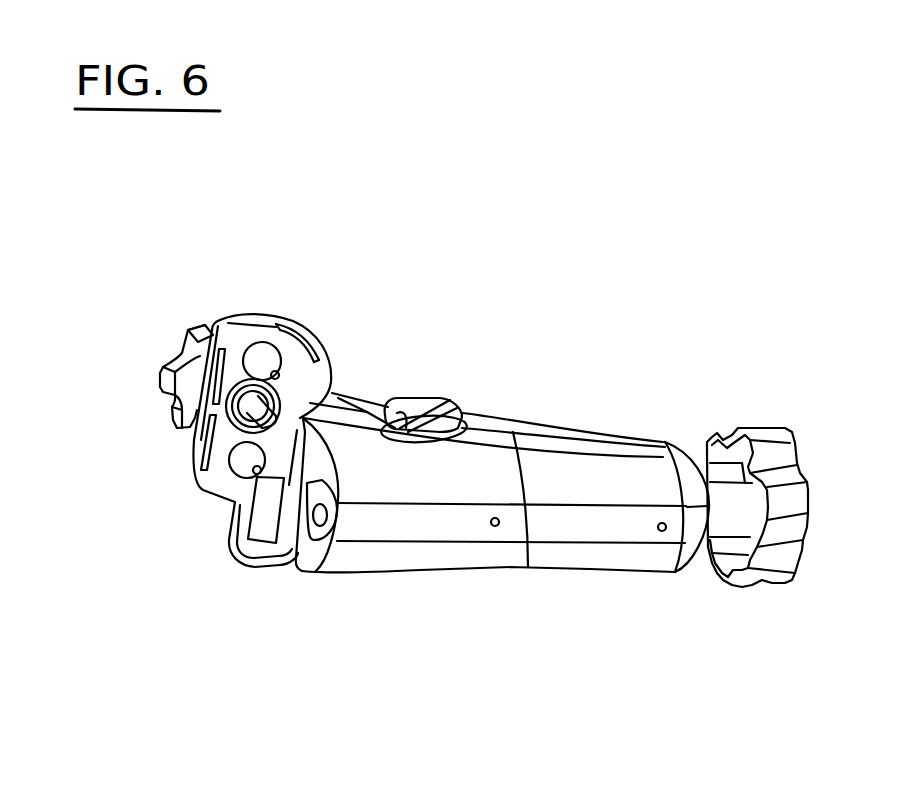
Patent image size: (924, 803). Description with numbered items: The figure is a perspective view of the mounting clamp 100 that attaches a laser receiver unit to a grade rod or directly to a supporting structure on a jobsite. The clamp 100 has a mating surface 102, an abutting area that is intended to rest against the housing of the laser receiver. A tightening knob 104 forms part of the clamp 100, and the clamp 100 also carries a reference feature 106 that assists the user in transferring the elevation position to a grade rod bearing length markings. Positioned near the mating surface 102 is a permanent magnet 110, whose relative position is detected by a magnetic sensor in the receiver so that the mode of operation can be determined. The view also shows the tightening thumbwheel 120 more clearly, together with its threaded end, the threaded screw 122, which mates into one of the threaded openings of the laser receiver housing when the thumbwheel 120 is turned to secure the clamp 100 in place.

The mounting clamp 100 is at (507, 604).
The mating surface 102 is at (312, 557).
The tightening knob 104 is at (778, 463).
The reference feature 106 is at (470, 413).
The permanent magnet 110 is at (318, 517).
The tightening thumbwheel 120 is at (193, 327).
The threaded screw 122 is at (278, 428).